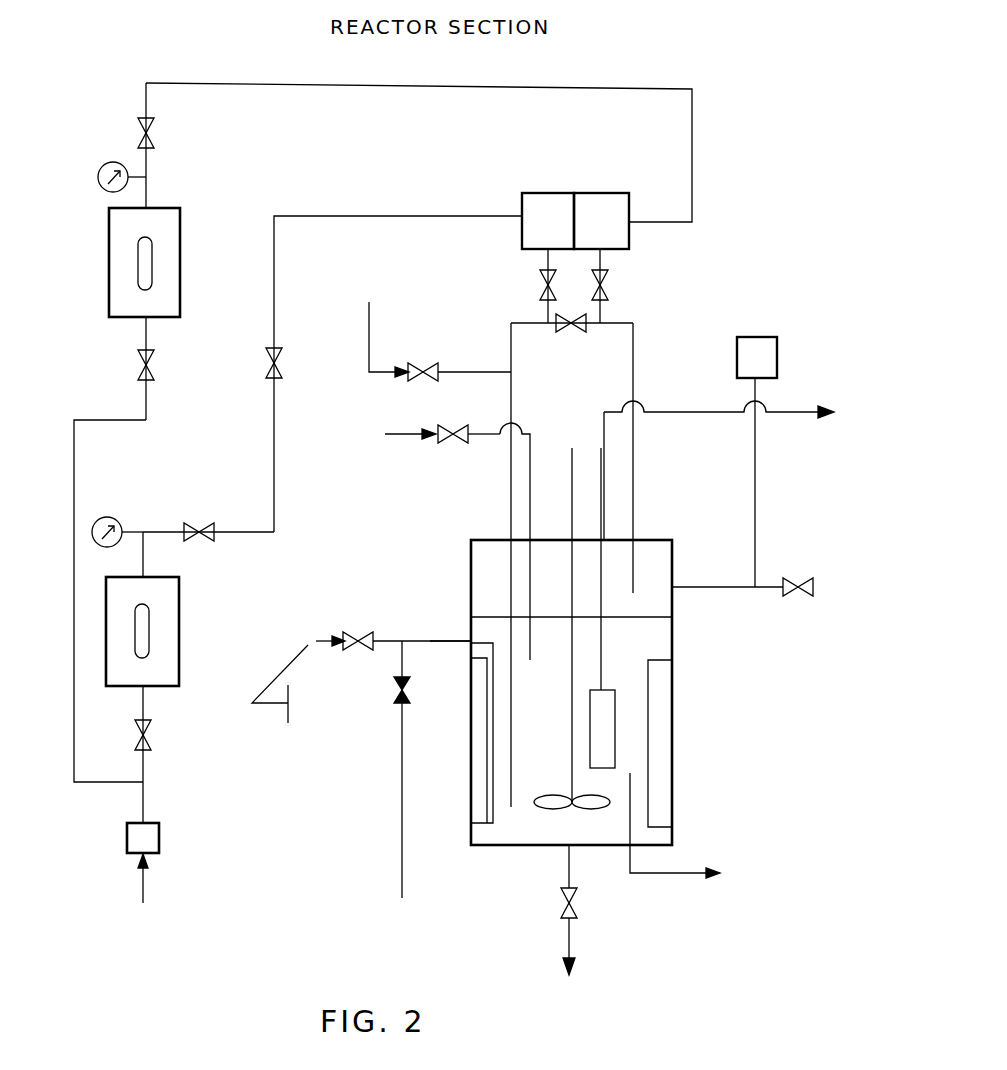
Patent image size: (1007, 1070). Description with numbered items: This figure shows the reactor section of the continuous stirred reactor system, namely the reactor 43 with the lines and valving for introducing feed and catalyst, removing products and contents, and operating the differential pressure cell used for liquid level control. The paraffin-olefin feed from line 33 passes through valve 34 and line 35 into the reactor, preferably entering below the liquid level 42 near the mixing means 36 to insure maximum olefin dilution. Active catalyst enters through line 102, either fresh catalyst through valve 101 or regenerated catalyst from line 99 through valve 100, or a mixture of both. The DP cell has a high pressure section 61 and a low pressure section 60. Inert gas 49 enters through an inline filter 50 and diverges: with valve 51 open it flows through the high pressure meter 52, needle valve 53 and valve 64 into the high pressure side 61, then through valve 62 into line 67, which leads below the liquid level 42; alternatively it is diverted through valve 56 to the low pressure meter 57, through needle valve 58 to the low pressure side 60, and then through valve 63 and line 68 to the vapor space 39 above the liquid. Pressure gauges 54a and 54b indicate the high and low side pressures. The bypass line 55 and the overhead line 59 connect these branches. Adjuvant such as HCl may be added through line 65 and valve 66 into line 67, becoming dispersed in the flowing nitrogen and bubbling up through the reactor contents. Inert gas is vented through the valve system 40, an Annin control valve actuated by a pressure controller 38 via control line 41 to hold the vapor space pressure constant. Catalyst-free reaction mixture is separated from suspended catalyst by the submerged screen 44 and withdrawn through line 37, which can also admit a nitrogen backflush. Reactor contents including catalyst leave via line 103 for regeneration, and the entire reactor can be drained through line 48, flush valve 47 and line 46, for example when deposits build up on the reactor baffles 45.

The feed line 33 is at (380, 458).
The feed valve 34 is at (458, 424).
The feed inlet line 35 is at (533, 478).
The mixing means 36 is at (573, 500).
The reaction mixture withdrawal line 37 is at (664, 412).
The pressure controller 38 is at (752, 336).
The vapor space 39 is at (497, 558).
The valve system 40 is at (797, 580).
The control line 41 is at (757, 522).
The liquid level 42 is at (486, 616).
The reactor 43 is at (469, 640).
The submerged screen 44 is at (616, 722).
The reactor baffles 45 is at (480, 776).
The drain line 46 is at (571, 875).
The flush valve 47 is at (560, 896).
The drain line 48 is at (571, 942).
The inert gas 49 is at (146, 884).
The inline filter 50 is at (160, 836).
The valve 51 is at (148, 738).
The high pressure meter 52 is at (181, 672).
The needle valve 53 is at (196, 521).
The pressure gauge 54a is at (102, 516).
The pressure gauge 54b is at (101, 168).
The bypass line 55 is at (73, 482).
The valve 56 is at (137, 370).
The low pressure meter 57 is at (108, 254).
The needle valve 58 is at (150, 136).
The overhead line 59 is at (556, 86).
The low pressure section 60 is at (596, 192).
The high pressure section 61 is at (541, 192).
The valve 62 is at (540, 290).
The valve 63 is at (605, 290).
The valve 64 is at (279, 366).
The adjuvant line 65 is at (372, 332).
The adjuvant valve 66 is at (427, 362).
The high pressure line 67 is at (514, 354).
The low pressure line 68 is at (634, 354).
The regenerated catalyst line 99 is at (403, 752).
The regenerated catalyst valve 100 is at (410, 690).
The fresh catalyst valve 101 is at (360, 630).
The catalyst feed line 102 is at (417, 640).
The reactor contents removal line 103 is at (676, 867).